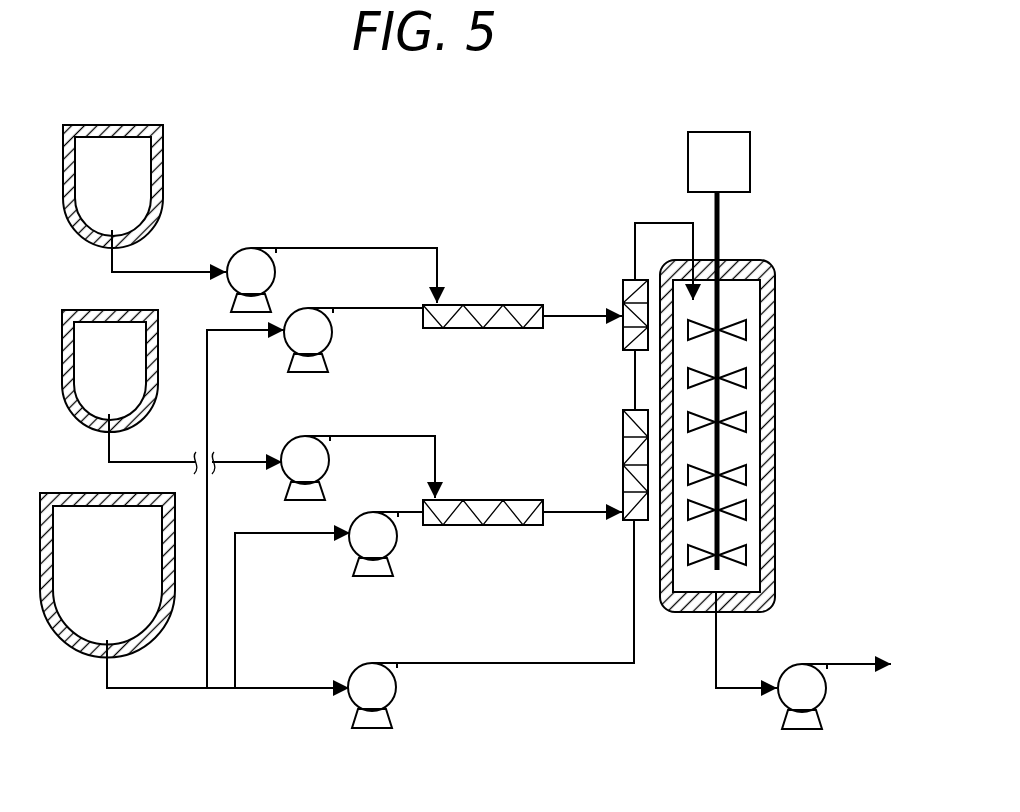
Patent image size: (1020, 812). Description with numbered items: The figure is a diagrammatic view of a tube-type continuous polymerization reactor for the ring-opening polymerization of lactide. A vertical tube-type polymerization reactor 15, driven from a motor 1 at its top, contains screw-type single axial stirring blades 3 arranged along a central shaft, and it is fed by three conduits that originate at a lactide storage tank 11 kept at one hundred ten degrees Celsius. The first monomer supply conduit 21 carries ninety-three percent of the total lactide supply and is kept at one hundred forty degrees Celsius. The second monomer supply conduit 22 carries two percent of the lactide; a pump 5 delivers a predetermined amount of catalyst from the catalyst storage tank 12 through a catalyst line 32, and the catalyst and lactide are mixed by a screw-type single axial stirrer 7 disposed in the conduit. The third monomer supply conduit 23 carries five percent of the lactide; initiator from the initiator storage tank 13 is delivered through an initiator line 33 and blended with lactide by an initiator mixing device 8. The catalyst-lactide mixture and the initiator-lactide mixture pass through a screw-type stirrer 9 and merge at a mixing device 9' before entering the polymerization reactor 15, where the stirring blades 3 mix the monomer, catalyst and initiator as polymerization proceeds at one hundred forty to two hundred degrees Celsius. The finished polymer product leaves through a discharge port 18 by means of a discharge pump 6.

The motor 1 is at (719, 351).
The screw-type single axial stirring blades 3 is at (748, 379).
The pump 5 is at (262, 262).
The discharge pump 6 is at (784, 700).
The screw-type single axial stirrer 7 is at (503, 498).
The initiator mixing device 8 is at (501, 303).
The screw-type stirrer 9 is at (611, 435).
The mixing device 9' is at (634, 286).
The lactide storage tank 11 is at (107, 575).
The catalyst storage tank 12 is at (110, 371).
The initiator storage tank 13 is at (113, 186).
The polymerization reactor 15 is at (744, 300).
The discharge port 18 is at (848, 664).
The first monomer supply conduit 21 is at (268, 690).
The second monomer supply conduit 22 is at (270, 536).
The third monomer supply conduit 23 is at (230, 333).
The supply line 32 is at (150, 460).
The supply line 33 is at (162, 270).